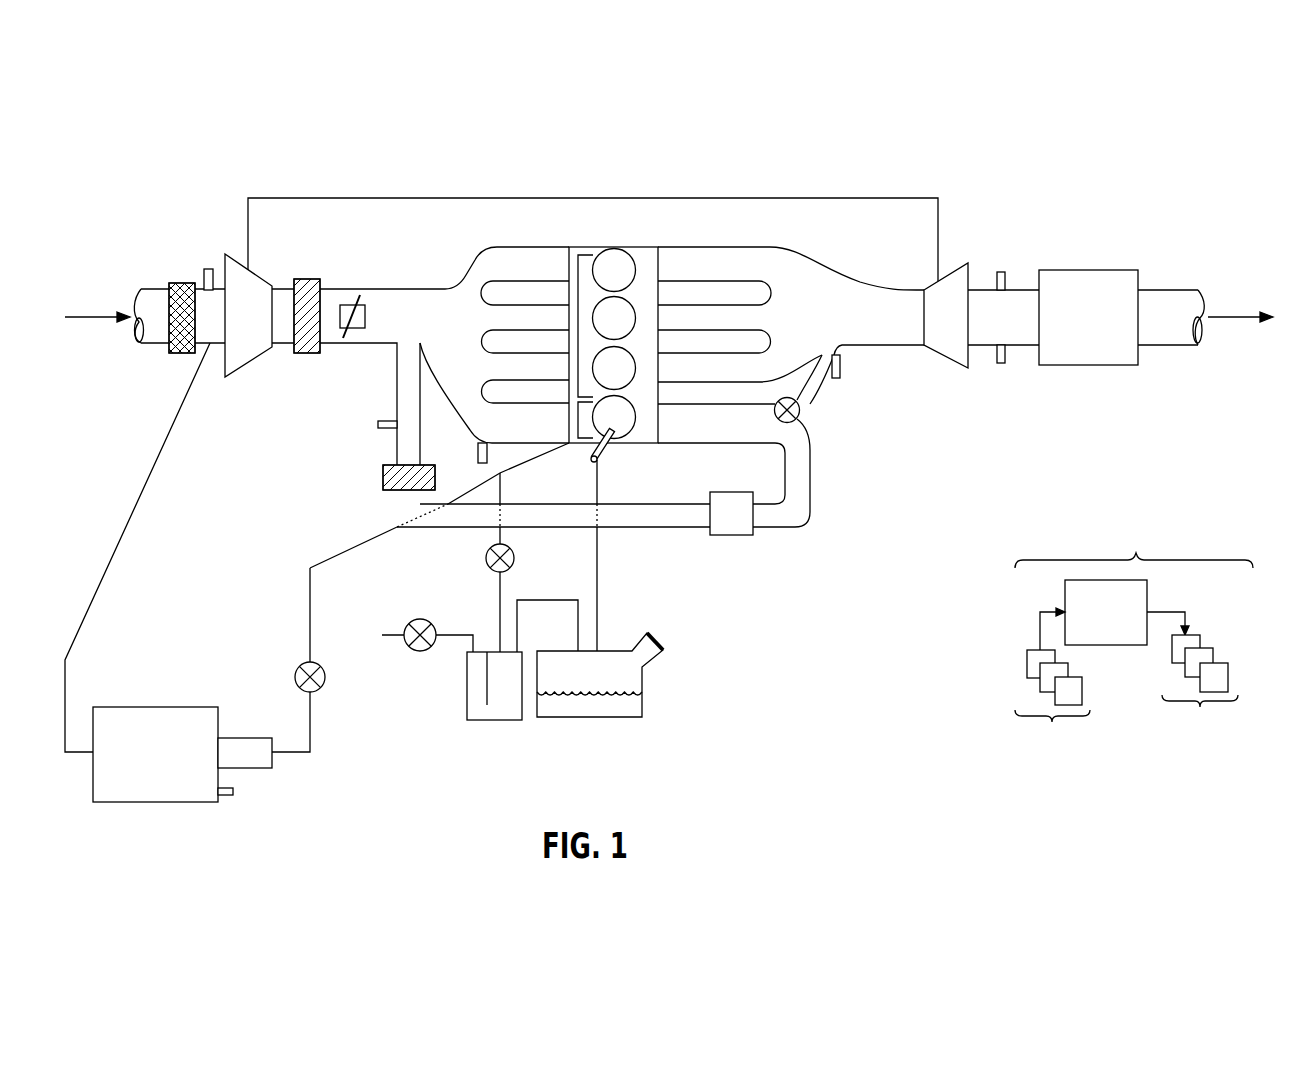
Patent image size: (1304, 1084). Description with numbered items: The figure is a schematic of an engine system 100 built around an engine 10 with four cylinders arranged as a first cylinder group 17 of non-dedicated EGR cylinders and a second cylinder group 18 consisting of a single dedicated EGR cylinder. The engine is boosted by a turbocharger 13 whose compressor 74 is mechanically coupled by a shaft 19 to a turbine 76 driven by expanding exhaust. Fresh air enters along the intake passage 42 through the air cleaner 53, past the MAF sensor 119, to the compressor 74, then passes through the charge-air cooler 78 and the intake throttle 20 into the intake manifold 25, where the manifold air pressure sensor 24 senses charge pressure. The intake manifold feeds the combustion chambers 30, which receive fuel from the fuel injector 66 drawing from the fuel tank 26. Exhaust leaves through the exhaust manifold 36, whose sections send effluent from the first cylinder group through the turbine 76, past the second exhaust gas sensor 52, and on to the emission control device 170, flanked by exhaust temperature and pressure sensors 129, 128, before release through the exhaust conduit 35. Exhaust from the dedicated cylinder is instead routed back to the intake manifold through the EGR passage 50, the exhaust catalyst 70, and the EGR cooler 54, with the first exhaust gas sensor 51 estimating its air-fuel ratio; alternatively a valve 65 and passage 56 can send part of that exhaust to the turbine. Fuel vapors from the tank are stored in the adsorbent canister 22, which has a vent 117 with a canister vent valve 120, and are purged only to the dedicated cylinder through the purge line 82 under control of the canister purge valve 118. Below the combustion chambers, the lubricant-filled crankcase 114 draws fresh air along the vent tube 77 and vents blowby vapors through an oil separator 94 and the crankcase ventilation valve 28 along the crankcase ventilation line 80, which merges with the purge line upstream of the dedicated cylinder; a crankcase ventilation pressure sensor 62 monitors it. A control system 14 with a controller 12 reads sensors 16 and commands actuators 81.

The engine system 100 is at (670, 470).
The engine 10 is at (600, 327).
The controller 12 is at (1106, 612).
The turbocharger 13 is at (262, 332).
The control system 14 is at (1134, 638).
The sensors 16 is at (1052, 687).
The first cylinder group 17 is at (587, 253).
The second cylinder group 18 is at (578, 436).
The shaft 19 is at (553, 198).
The intake throttle 20 is at (365, 315).
The adsorbent canister 22 is at (466, 705).
The manifold air pressure sensor 24 is at (477, 457).
The intake manifold 25 is at (467, 334).
The fuel tank 26 is at (595, 684).
The crankcase ventilation valve 28 is at (300, 663).
The combustion chambers 30 is at (633, 262).
The exhaust conduit 35 is at (1175, 290).
The exhaust manifold 36 is at (808, 324).
The intake passage 42 is at (150, 345).
The EGR passage 50 is at (633, 527).
The first exhaust gas sensor 51 is at (380, 428).
The second exhaust gas sensor 52 is at (842, 378).
The air cleaner 53 is at (171, 281).
The EGR cooler 54 is at (390, 490).
The passage 56 is at (818, 405).
The crankcase ventilation pressure sensor 62 is at (233, 793).
The valve 65 is at (805, 418).
The fuel injector 66 is at (610, 450).
The exhaust catalyst 70 is at (740, 528).
The compressor 74 is at (258, 326).
The turbine 76 is at (955, 331).
The vent tube 77 is at (128, 520).
The charge-air cooler 78 is at (316, 279).
The crankcase ventilation line 80 is at (326, 561).
The actuators 81 is at (1192, 681).
The purge line 82 is at (502, 490).
The oil separator 94 is at (254, 766).
The crankcase 114 is at (169, 769).
The vent 117 is at (393, 633).
The canister purge valve 118 is at (512, 562).
The MAF sensor 119 is at (208, 268).
The canister vent valve 120 is at (413, 648).
The exhaust gas temperature and pressure sensor 128 is at (1001, 364).
The exhaust gas temperature and pressure sensor 129 is at (1002, 272).
The emission control device 170 is at (1076, 270).